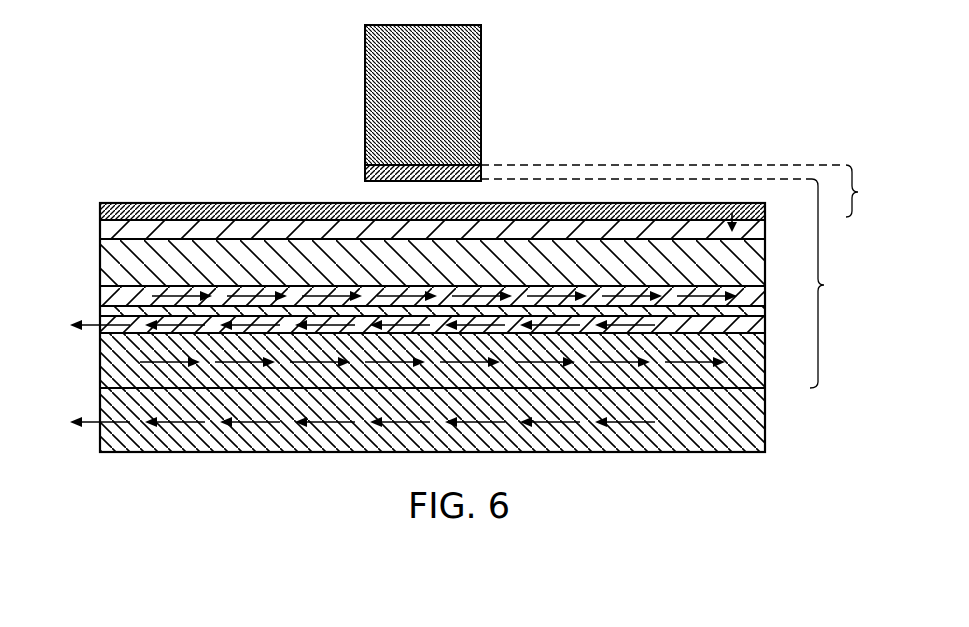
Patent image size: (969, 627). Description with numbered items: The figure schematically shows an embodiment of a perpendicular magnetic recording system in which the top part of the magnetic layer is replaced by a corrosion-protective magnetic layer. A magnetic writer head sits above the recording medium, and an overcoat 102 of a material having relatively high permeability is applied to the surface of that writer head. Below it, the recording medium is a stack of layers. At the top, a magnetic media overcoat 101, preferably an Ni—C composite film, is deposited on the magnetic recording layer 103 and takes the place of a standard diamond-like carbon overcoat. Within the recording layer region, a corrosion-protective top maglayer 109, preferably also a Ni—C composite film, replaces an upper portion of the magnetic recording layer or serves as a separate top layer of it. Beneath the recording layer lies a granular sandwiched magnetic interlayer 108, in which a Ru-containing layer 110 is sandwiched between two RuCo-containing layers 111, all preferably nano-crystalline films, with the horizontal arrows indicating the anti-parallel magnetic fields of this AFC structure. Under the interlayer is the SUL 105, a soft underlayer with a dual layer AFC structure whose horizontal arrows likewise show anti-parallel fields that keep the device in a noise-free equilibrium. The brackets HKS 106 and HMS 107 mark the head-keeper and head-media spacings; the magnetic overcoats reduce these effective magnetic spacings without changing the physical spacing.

The magnetic media overcoat 101 is at (413, 317).
The overcoat on magnetic writer head 102 is at (356, 168).
The magnetic recording layer 103 is at (90, 220).
The SUL 105 is at (90, 333).
The HKS 106 is at (837, 283).
The HMS 107 is at (690, 191).
The magnetic interlayer 108 is at (421, 331).
The corrosion-protective top maglayer 109 is at (765, 203).
The Ru-containing layer 110 is at (765, 287).
The RuCo-containing layers 111 is at (765, 301).